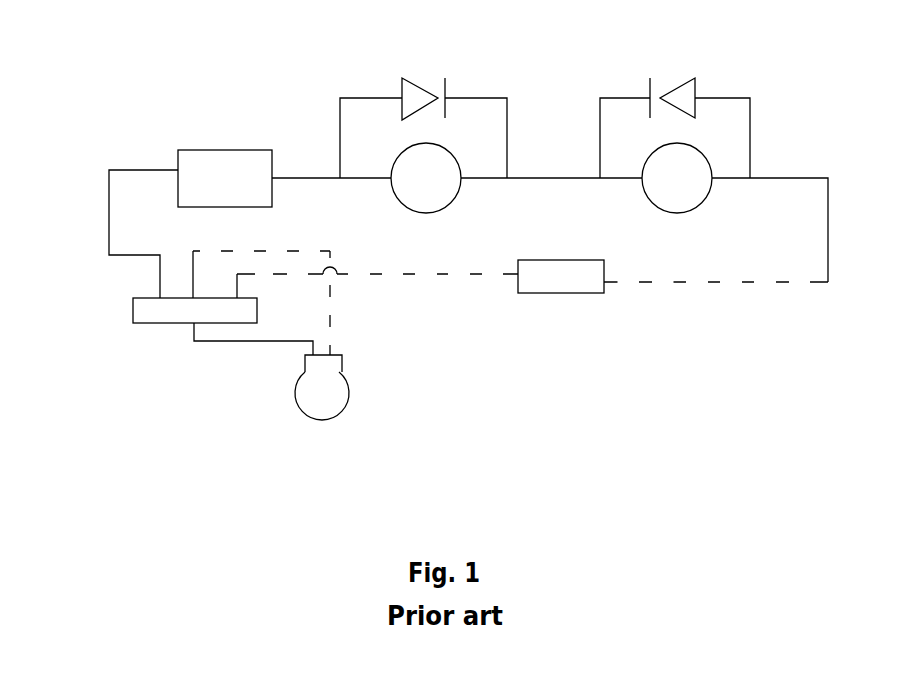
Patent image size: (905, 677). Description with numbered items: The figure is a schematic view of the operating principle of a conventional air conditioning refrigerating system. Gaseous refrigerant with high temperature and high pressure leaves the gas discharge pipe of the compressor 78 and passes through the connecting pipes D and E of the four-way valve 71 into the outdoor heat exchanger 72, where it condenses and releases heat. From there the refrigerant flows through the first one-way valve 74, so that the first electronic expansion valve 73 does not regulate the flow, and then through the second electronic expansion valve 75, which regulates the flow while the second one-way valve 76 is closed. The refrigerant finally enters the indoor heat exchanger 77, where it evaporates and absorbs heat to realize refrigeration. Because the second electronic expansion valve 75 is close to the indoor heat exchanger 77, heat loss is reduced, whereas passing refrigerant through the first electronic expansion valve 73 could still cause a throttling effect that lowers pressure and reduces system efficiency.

The four-way valve 71 is at (97, 318).
The outdoor heat exchanger 72 is at (212, 122).
The first electronic expansion valve 73 is at (365, 205).
The first one-way valve 74 is at (418, 50).
The second electronic expansion valve 75 is at (615, 200).
The second one-way valve 76 is at (690, 50).
The indoor heat exchanger 77 is at (562, 335).
The compressor 78 is at (322, 455).